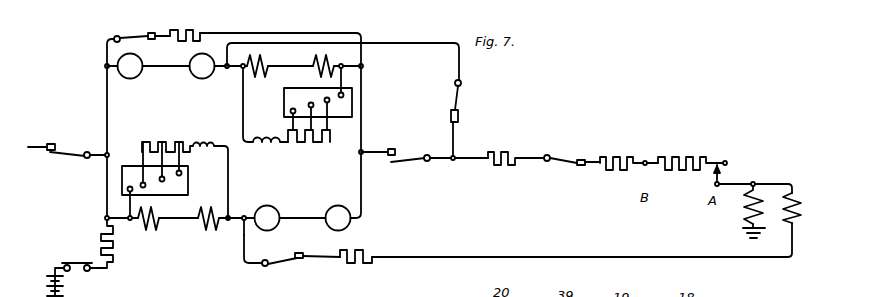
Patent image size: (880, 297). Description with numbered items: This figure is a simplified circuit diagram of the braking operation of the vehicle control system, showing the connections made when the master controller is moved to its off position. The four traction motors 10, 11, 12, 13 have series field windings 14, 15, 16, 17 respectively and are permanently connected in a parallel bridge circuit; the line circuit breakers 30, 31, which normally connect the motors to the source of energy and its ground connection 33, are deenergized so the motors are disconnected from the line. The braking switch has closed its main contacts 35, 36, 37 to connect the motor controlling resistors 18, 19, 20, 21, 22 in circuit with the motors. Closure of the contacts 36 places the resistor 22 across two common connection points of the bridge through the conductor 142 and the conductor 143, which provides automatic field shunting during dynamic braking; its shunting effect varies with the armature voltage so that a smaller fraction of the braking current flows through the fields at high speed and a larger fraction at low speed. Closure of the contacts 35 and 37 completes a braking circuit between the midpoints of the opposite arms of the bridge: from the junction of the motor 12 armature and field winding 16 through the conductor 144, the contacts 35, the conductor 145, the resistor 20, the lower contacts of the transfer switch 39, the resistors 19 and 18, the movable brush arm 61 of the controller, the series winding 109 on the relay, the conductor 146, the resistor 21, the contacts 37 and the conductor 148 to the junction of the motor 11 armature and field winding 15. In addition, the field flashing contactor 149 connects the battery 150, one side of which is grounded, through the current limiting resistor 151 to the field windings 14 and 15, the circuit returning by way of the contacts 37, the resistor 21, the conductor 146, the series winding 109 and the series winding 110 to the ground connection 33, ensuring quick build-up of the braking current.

The traction motor 10 is at (338, 218).
The traction motor 11 is at (267, 218).
The traction motor 12 is at (202, 66).
The traction motor 13 is at (130, 66).
The series field winding 14 is at (155, 225).
The series field winding 15 is at (201, 226).
The series field winding 16 is at (268, 52).
The series field winding 17 is at (315, 57).
The motor controlling resistor 18 is at (687, 157).
The motor controlling resistor 19 is at (616, 157).
The motor controlling resistor 20 is at (500, 152).
The motor controlling resistor 21 is at (359, 264).
The motor controlling resistor 22 is at (197, 33).
The line circuit breaker 30 is at (72, 160).
The line circuit breaker 31 is at (413, 166).
The ground connection 33 is at (748, 234).
The main contacts of braking switch 35 is at (462, 97).
The main contacts of braking switch 36 is at (132, 36).
The main contacts of braking switch 37 is at (287, 265).
The transfer switch 39 is at (567, 157).
The movable brush arm 61 is at (714, 184).
The series winding 109 is at (783, 218).
The series winding 110 is at (744, 214).
The conductor 142 is at (105, 53).
The conductor 143 is at (293, 33).
The conductor 144 is at (407, 43).
The conductor 145 is at (452, 133).
The conductor 146 is at (595, 257).
The conductor 148 is at (243, 240).
The field flashing contactor 149 is at (78, 262).
The battery 150 is at (66, 291).
The current limiting resistor 151 is at (113, 253).